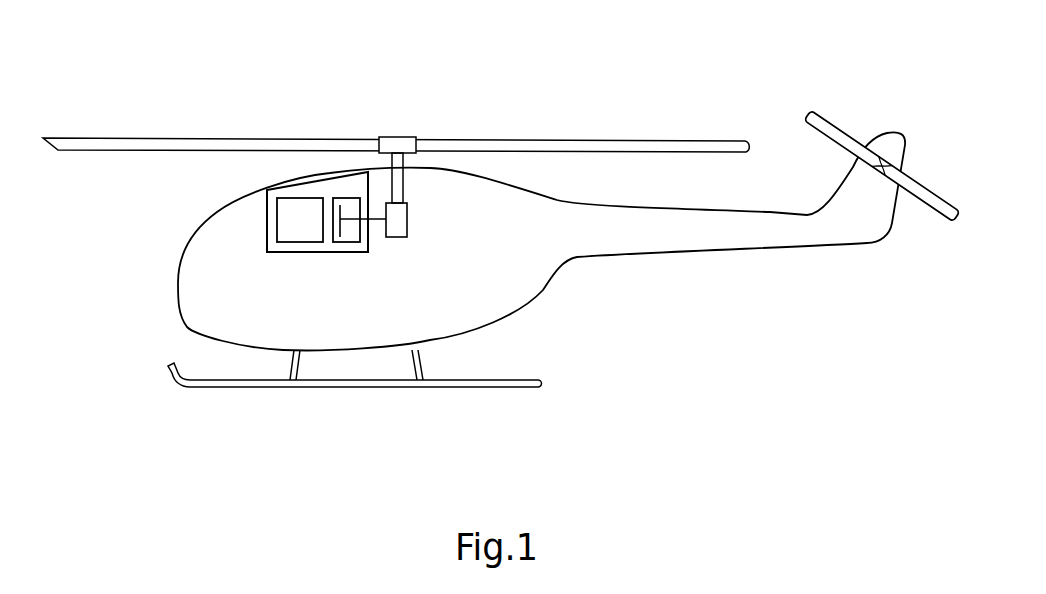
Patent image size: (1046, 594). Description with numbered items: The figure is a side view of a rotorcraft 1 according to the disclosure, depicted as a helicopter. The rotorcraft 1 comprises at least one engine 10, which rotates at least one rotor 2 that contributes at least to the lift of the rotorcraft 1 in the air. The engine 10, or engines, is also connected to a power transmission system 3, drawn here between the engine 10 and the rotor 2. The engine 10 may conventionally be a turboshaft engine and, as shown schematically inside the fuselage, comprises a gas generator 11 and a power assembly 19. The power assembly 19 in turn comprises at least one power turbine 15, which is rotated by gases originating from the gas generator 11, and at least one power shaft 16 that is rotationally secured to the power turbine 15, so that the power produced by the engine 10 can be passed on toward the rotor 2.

The rotorcraft 1 is at (593, 355).
The rotor 2 is at (435, 108).
The power transmission system 3 is at (438, 216).
The engine 10 is at (288, 252).
The gas generator 11 is at (298, 242).
The power turbine 15 is at (351, 233).
The power shaft 16 is at (393, 220).
The power assembly 19 is at (345, 252).